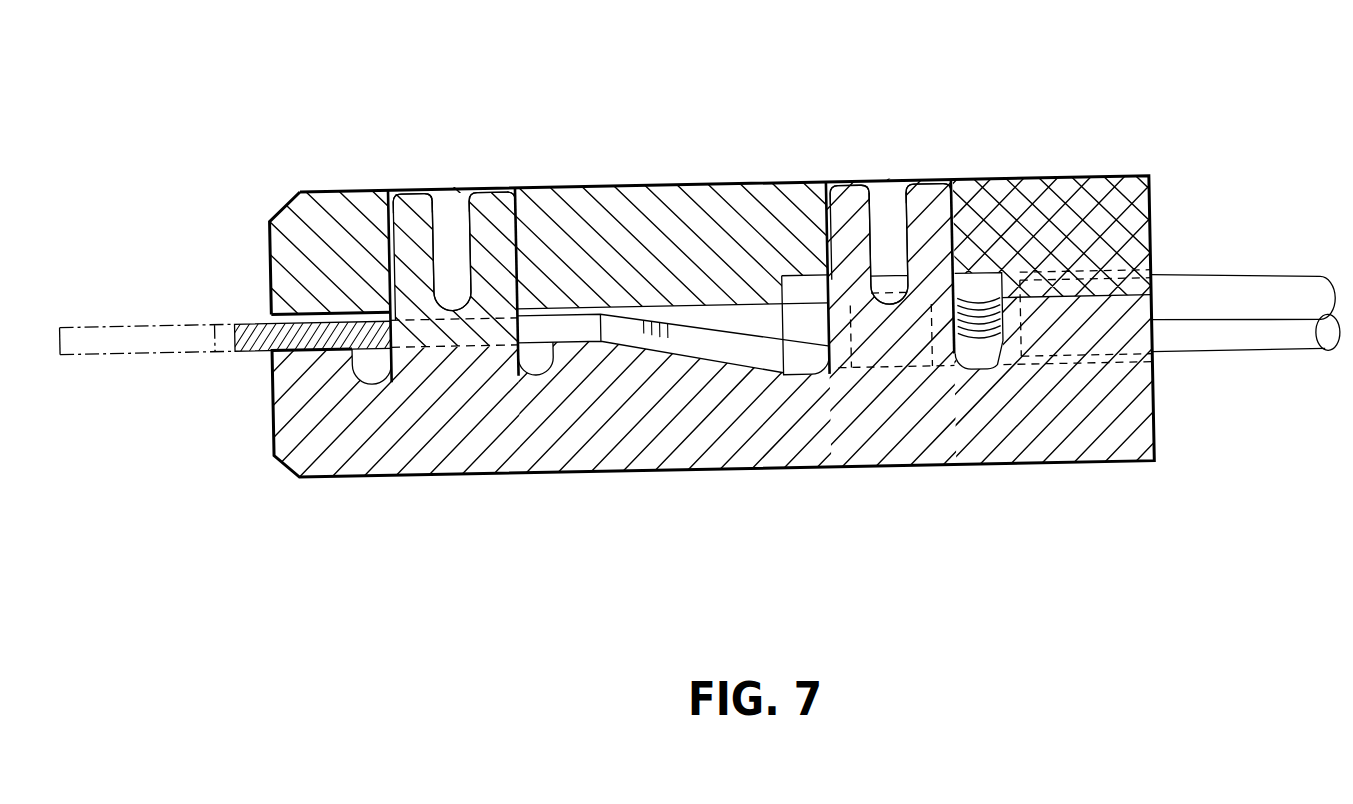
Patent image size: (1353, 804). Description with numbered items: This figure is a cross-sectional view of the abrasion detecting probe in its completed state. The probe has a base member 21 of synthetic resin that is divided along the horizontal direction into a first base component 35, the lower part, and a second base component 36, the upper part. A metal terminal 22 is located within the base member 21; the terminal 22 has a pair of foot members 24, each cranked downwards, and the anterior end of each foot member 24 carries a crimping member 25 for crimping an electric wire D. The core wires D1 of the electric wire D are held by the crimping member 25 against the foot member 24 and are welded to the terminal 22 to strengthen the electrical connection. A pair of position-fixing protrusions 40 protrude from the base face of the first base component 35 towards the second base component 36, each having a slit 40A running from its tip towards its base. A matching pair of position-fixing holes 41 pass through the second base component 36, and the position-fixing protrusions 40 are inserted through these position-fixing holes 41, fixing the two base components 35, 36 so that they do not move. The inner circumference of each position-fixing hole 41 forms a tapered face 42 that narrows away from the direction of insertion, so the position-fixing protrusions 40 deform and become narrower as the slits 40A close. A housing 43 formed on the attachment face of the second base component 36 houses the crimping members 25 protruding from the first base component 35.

The base member 21 is at (610, 395).
The terminal 22 is at (536, 350).
The foot member 24 is at (707, 348).
The crimping member 25 is at (894, 343).
The first base component 35 is at (262, 416).
The second base component 36 is at (259, 286).
The position-fixing protrusion 40 is at (490, 235).
The slit 40A is at (472, 190).
The position-fixing hole 41 is at (448, 205).
The tapered face 42 is at (405, 187).
The housing 43 is at (1063, 177).
The electric wire D is at (1232, 298).
The core wires D1 is at (993, 365).